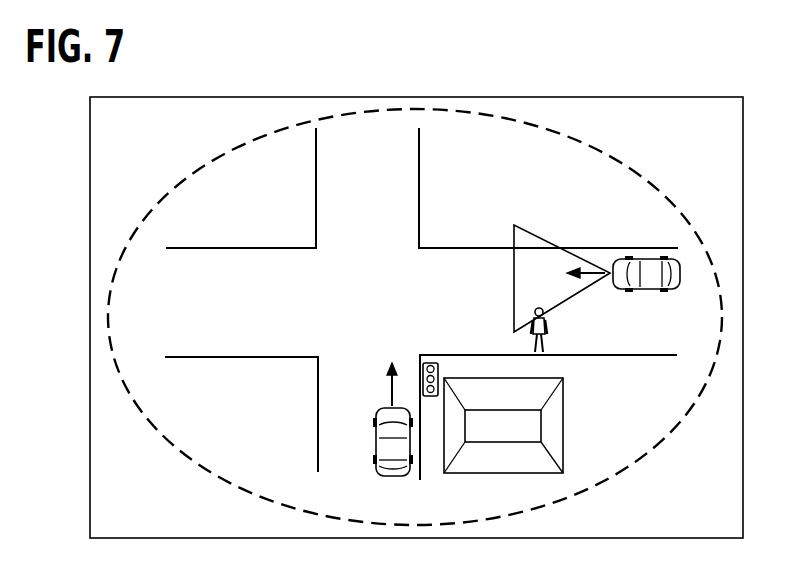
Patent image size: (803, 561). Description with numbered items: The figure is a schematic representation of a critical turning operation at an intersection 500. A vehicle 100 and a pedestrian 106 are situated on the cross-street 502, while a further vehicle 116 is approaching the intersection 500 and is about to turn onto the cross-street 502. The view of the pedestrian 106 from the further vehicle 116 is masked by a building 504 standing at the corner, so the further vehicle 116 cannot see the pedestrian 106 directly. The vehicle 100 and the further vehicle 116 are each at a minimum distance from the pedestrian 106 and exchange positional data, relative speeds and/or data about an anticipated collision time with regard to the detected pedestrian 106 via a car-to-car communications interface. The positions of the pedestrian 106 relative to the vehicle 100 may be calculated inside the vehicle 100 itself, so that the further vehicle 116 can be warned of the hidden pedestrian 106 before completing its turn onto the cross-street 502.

The intersection 500 is at (645, 178).
The cross-street 502 is at (440, 283).
The vehicle 100 is at (630, 260).
The pedestrian 106 is at (547, 320).
The further vehicle 116 is at (375, 418).
The building 504 is at (563, 405).